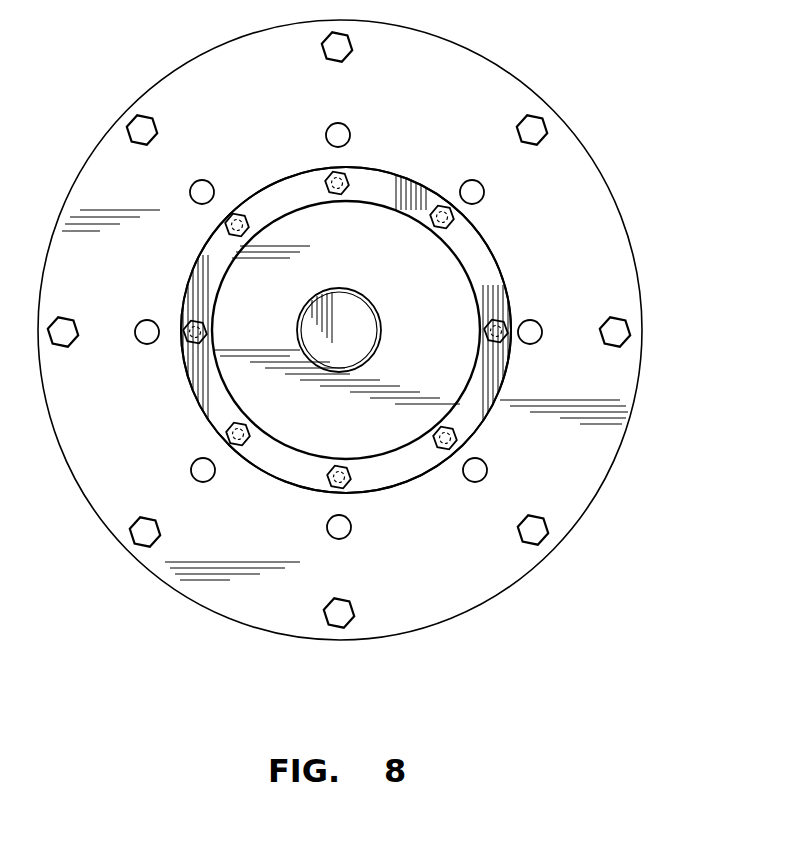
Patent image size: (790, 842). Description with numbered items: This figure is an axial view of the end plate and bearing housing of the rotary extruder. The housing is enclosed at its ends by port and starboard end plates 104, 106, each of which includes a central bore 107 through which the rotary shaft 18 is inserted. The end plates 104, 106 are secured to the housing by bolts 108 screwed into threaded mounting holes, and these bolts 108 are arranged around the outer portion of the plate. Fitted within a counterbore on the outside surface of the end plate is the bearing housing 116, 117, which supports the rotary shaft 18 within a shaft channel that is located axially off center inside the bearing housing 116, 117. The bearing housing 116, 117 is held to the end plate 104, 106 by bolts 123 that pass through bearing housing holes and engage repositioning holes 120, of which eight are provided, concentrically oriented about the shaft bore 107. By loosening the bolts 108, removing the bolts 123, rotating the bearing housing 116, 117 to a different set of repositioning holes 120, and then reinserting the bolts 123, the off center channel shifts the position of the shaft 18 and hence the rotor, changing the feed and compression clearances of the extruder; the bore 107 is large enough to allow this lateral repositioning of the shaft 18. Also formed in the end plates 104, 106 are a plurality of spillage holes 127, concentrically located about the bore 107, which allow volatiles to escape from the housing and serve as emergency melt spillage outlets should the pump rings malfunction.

The port end plate 104 is at (483, 58).
The starboard end plate 106 is at (525, 90).
The bore 107 is at (360, 305).
The rotary shaft 18 is at (365, 350).
The bolts 108 is at (321, 47).
The port bearing housing 116 is at (436, 458).
The starboard bearing housing 117 is at (414, 471).
The repositioning holes 120 is at (492, 322).
The bolts 123 is at (330, 180).
The spillage holes 127 is at (331, 527).